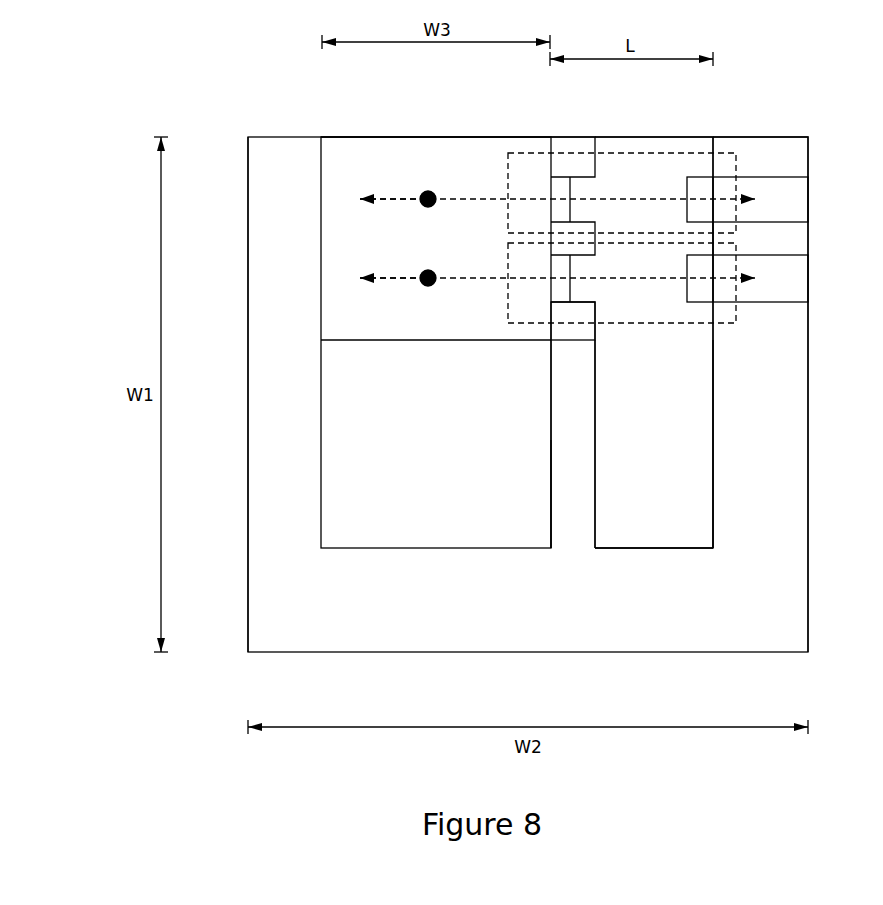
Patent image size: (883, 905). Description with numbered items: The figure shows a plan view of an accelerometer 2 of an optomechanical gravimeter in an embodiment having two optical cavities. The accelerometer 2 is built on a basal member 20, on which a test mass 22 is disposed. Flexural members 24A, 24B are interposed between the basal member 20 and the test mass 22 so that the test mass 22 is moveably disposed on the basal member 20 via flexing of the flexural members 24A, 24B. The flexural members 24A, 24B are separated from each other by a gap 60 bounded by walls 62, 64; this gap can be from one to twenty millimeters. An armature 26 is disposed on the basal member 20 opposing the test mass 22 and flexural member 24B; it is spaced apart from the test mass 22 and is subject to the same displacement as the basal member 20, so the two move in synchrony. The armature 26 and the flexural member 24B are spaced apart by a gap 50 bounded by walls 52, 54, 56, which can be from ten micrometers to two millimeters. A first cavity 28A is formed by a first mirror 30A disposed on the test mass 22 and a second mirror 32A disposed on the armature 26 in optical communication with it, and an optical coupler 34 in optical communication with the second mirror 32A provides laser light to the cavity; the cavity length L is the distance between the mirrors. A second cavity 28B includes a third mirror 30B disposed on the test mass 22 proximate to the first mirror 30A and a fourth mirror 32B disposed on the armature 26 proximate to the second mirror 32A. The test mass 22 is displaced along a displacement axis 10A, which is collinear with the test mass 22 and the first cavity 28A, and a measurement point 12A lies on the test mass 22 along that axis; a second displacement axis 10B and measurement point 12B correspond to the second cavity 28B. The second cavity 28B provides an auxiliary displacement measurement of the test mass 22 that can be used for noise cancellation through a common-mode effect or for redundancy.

The first accelerometer 2 is at (63, 36).
The basal member 20 is at (508, 652).
The test mass 22 is at (382, 155).
The flexural member 24A is at (280, 340).
The flexural member 24B is at (570, 505).
The armature 26 is at (788, 152).
The first cavity 28A is at (627, 154).
The second cavity 28B is at (613, 323).
The first mirror 30A is at (562, 184).
The third mirror 30B is at (562, 294).
The second mirror 32A is at (702, 184).
The fourth mirror 32B is at (702, 294).
The optical coupler 34 is at (768, 184).
The first displacement axis 10A is at (428, 191).
The displacement axis 10B is at (428, 287).
The first measurement point 12A is at (385, 197).
The measurement point 12B is at (385, 282).
The gap 50 is at (679, 533).
The wall 52 is at (595, 415).
The wall 54 is at (713, 447).
The wall 56 is at (630, 548).
The gap 60 is at (390, 532).
The wall 62 is at (321, 447).
The wall 64 is at (551, 447).